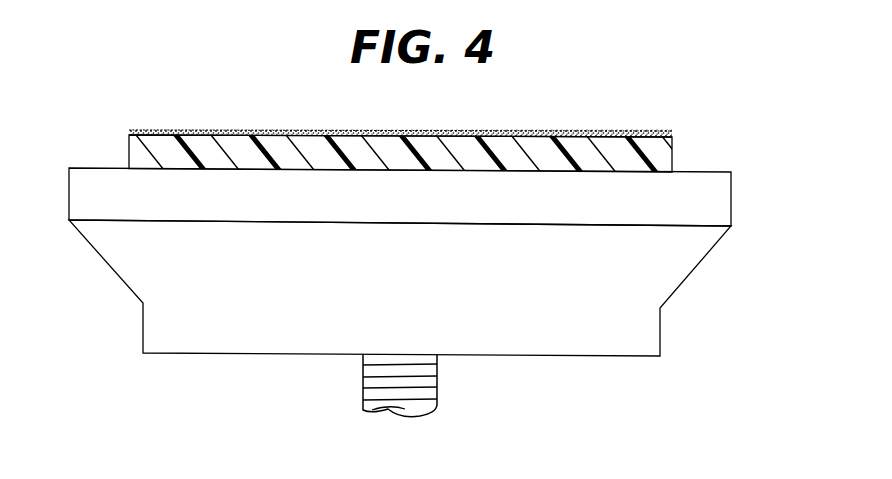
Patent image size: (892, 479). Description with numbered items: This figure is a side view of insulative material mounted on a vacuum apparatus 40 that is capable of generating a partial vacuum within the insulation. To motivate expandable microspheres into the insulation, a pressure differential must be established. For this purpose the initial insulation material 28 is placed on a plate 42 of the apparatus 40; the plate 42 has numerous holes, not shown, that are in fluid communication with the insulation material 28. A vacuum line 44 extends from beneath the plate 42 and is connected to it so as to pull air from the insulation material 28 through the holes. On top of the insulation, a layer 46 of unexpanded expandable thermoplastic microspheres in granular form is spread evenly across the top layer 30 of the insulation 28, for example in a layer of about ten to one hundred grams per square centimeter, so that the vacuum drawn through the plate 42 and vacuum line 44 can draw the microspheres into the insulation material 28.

The apparatus 40 is at (752, 193).
The plate 42 is at (103, 167).
The insulation material 28 is at (662, 155).
The top layer 30 is at (672, 136).
The layer of microspheres 46 is at (532, 134).
The vacuum line 44 is at (437, 390).